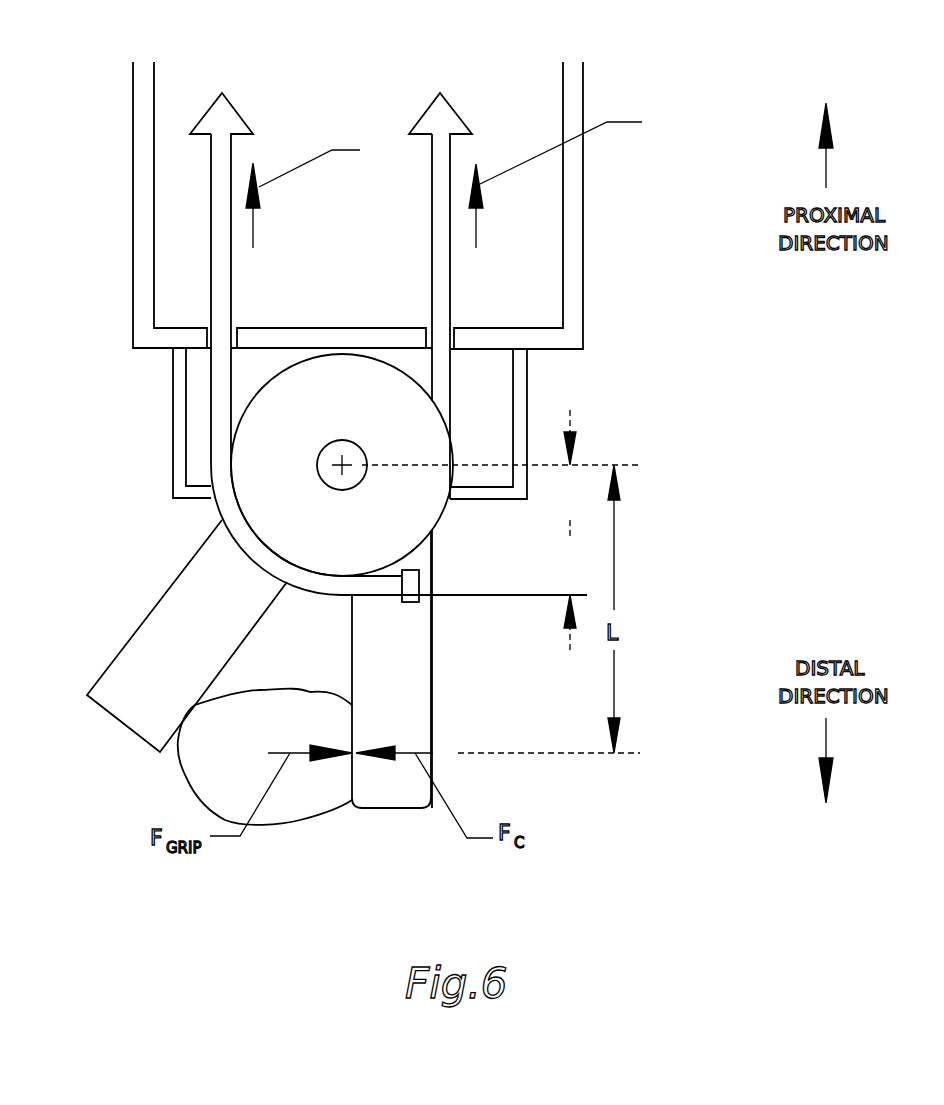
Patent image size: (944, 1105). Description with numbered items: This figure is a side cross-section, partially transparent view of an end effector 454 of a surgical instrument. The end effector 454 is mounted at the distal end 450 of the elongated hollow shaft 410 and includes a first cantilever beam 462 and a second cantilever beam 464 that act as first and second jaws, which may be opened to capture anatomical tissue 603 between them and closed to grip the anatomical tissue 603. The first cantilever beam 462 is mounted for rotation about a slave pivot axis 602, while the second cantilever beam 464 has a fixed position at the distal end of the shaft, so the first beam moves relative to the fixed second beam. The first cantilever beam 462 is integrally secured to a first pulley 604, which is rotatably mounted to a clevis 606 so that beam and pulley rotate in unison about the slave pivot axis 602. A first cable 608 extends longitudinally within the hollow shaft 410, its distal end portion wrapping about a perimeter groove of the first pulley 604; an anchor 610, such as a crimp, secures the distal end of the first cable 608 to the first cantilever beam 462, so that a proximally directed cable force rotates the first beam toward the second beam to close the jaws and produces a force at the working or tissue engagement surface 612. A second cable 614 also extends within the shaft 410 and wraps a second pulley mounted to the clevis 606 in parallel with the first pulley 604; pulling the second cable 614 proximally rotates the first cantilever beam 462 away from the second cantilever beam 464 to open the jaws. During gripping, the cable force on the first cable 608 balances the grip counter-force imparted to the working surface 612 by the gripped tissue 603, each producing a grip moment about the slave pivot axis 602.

The shaft 410 is at (133, 197).
The distal end 450 is at (630, 258).
The end effector 454 is at (113, 503).
The first cantilever beam 462 is at (400, 682).
The second cantilever beam 464 is at (175, 598).
The slave pivot axis 602 is at (342, 463).
The anatomical tissue 603 is at (205, 768).
The first pulley 604 is at (340, 390).
The clevis 606 is at (173, 411).
The first cable 608 is at (232, 272).
The anchor 610 is at (412, 602).
The working/tissue engagement surface 612 is at (351, 637).
The second cable 614 is at (452, 292).